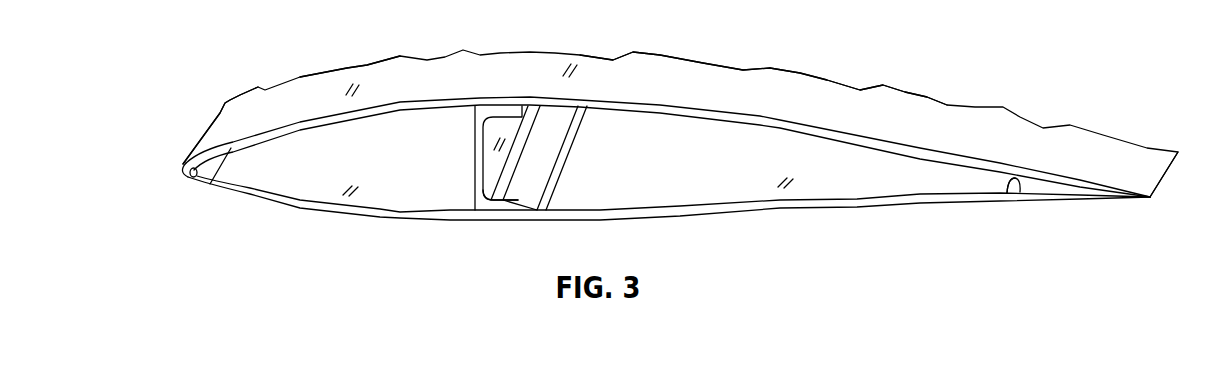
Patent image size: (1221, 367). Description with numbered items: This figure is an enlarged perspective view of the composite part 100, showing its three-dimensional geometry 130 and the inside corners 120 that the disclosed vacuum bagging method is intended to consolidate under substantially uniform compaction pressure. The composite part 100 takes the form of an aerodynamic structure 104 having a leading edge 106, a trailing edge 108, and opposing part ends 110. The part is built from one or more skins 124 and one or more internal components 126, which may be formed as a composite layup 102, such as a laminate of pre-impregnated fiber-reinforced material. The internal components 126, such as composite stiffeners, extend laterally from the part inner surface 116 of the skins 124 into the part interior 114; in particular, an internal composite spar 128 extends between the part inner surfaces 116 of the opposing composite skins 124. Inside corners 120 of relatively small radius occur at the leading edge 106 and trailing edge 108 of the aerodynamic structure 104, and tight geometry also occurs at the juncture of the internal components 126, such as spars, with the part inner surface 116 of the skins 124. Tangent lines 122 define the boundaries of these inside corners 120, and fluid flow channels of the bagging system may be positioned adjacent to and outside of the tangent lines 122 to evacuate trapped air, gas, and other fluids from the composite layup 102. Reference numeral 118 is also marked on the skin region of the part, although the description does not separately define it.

The composite part 100 is at (638, 52).
The composite layup 102 is at (702, 70).
The aerodynamic structure 104 is at (813, 77).
The leading edge 106 is at (220, 110).
The trailing edge 108 is at (1150, 180).
The part ends 110 is at (1090, 198).
The part interior 114 is at (305, 190).
The part inner surface 116 is at (352, 198).
The outer layer 118 is at (357, 72).
The inside corners 120 is at (233, 0).
The tangent lines 122 is at (1007, 183).
The skins 124 is at (565, 62).
The internal components 126 is at (475, 167).
The internal composite spar 128 is at (475, 187).
The three-dimensional geometry 130 is at (477, 130).